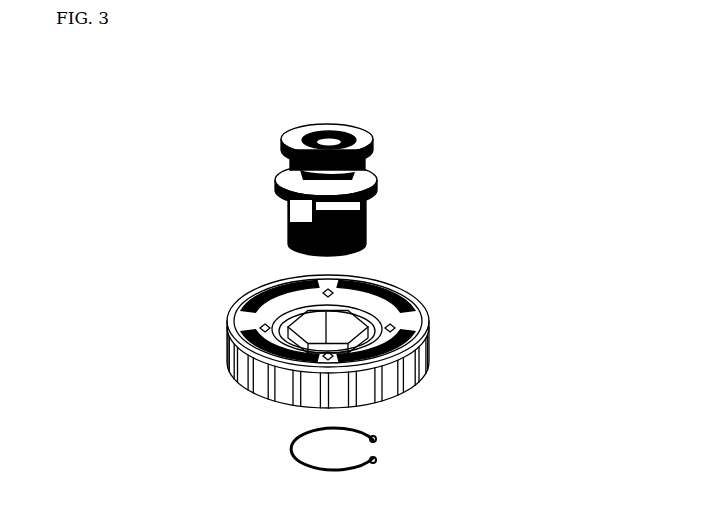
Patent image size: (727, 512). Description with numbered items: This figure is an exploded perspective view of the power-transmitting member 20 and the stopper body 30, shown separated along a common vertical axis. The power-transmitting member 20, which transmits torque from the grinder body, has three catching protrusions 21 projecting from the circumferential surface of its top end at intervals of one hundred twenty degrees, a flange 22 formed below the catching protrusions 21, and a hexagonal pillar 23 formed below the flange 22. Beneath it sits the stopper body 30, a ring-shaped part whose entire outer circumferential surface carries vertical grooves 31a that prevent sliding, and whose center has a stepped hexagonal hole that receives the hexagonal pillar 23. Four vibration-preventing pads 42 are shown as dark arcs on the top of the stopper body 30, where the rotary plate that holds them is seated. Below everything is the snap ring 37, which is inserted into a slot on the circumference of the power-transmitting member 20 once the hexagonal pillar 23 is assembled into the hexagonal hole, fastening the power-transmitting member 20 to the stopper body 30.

The power-transmitting member 20 is at (268, 166).
The catching protrusions 21 is at (287, 133).
The flange 22 is at (378, 176).
The hexagonal pillar 23 is at (368, 214).
The stopper body 30 is at (214, 329).
The vertical grooves 31a is at (261, 378).
The vibration-preventing pads 42 is at (260, 292).
The snap ring 37 is at (298, 457).